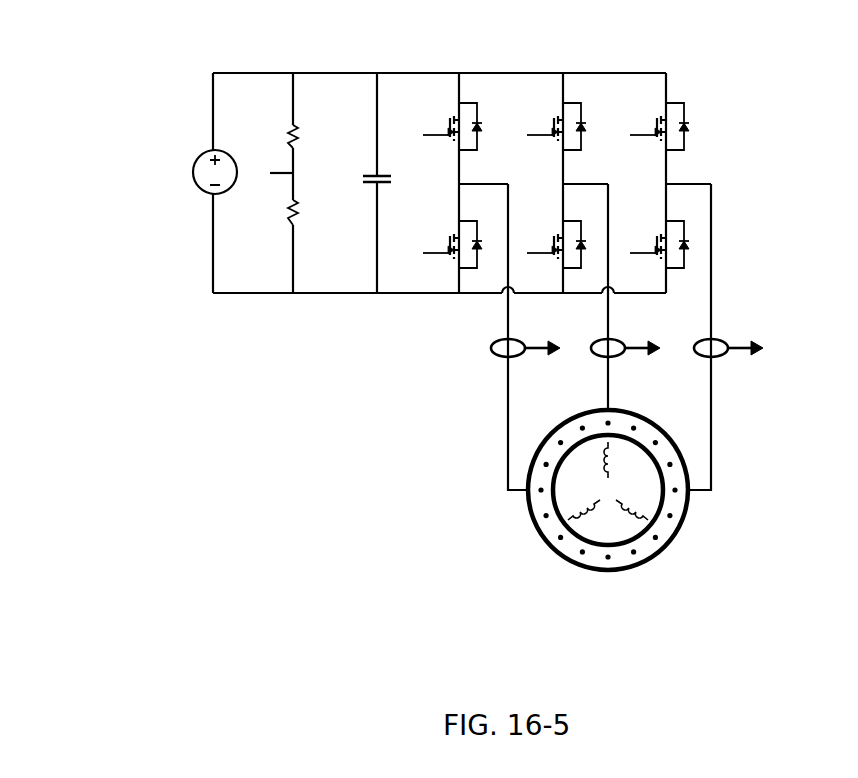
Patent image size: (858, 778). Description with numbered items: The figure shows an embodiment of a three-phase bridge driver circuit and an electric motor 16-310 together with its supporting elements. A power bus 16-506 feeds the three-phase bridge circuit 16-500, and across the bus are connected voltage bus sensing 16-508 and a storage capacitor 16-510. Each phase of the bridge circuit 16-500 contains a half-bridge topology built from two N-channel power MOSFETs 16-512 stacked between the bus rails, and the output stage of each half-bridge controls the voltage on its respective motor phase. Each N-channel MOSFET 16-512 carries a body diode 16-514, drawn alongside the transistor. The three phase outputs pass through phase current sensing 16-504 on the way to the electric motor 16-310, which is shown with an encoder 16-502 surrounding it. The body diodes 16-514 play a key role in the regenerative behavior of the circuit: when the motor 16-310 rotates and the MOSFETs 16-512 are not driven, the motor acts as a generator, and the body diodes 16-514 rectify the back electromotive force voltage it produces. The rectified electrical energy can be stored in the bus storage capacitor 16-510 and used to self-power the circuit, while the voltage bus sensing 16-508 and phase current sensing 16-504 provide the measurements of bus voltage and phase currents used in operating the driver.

The three-phase bridge circuit 16-500 is at (563, 75).
The encoder 16-502 is at (563, 545).
The phase current sensing 16-504 is at (720, 338).
The power bus 16-506 is at (162, 161).
The voltage bus sensing 16-508 is at (270, 168).
The storage capacitor 16-510 is at (366, 173).
The N-channel power MOSFET 16-512 is at (448, 118).
The body diode 16-514 is at (690, 129).
The electric motor 16-310 is at (626, 482).